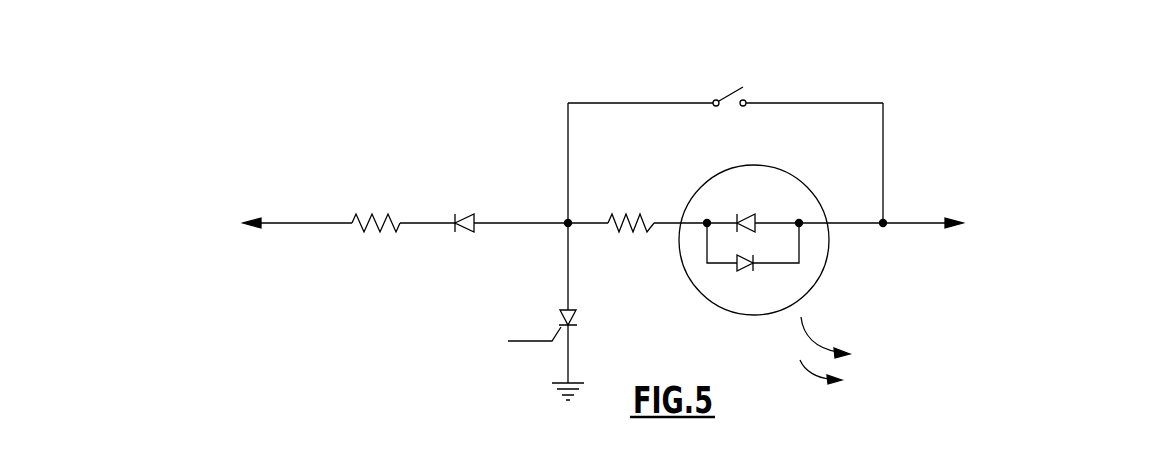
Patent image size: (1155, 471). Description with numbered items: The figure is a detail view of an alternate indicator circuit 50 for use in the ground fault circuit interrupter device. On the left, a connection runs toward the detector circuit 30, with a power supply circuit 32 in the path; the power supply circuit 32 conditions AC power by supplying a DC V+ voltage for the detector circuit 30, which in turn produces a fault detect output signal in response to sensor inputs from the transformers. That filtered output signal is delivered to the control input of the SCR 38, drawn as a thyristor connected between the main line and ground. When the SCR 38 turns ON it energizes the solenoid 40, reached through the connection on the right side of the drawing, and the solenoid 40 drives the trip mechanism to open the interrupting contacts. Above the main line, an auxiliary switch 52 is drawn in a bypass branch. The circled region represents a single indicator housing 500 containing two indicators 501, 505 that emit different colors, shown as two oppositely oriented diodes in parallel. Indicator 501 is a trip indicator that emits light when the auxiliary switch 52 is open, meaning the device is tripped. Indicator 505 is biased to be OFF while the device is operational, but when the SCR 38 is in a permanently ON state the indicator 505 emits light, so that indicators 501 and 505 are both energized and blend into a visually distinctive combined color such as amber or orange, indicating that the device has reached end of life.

The detector circuit 30 is at (151, 226).
The power supply circuit 32 is at (410, 197).
The SCR 38 is at (555, 320).
The solenoid 40 is at (1051, 226).
The alternate indicator circuit 50 is at (934, 65).
The auxiliary switch 52 is at (730, 88).
The indicator housing 500 is at (826, 262).
The indicator 501 is at (730, 215).
The indicator 505 is at (735, 272).